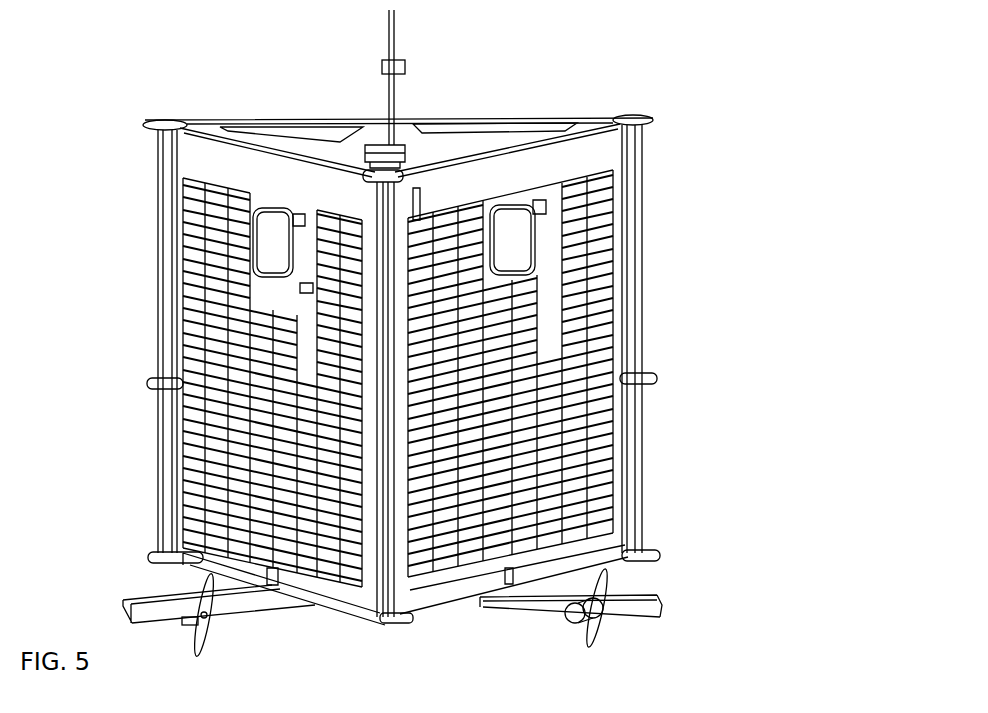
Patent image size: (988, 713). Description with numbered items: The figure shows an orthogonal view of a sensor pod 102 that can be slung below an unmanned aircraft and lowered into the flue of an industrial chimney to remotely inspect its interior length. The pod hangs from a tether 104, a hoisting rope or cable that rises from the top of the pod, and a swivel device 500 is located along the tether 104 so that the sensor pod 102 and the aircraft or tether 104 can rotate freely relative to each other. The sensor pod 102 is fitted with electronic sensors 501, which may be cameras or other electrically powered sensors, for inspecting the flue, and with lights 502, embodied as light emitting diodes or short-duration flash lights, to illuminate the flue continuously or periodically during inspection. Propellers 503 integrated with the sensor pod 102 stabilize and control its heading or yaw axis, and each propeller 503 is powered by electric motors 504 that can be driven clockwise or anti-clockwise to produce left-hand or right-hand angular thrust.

The sensor pod 102 is at (673, 217).
The tether 104 is at (417, 23).
The swivel device 500 is at (417, 62).
The electronic sensors 501 is at (273, 248).
The lights 502 is at (570, 433).
The propellers 503 is at (208, 650).
The electric motors 504 is at (587, 615).